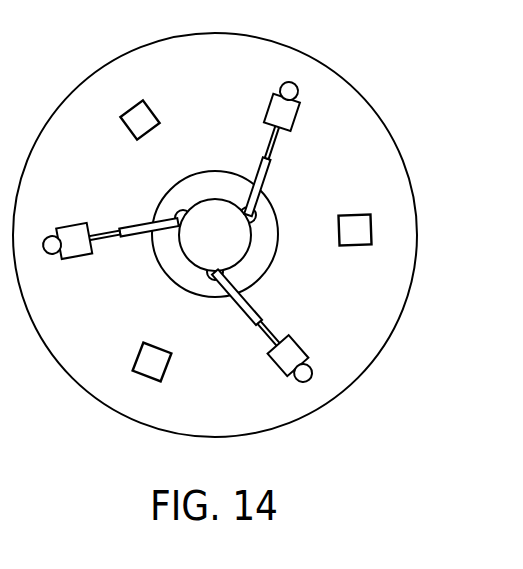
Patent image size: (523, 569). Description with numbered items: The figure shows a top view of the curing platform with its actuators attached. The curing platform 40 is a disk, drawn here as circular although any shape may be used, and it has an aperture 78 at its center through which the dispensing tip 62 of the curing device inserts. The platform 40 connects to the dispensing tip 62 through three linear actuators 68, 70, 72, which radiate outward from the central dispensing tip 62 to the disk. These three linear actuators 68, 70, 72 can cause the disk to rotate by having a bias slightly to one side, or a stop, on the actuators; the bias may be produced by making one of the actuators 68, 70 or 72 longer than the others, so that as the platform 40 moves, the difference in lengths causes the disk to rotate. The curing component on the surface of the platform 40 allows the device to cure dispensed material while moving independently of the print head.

The platform 40 is at (417, 242).
The dispensing tip 62 is at (245, 242).
The aperture 78 is at (273, 205).
The linear actuator 68 is at (121, 229).
The linear actuator 70 is at (262, 160).
The linear actuator 72 is at (252, 320).